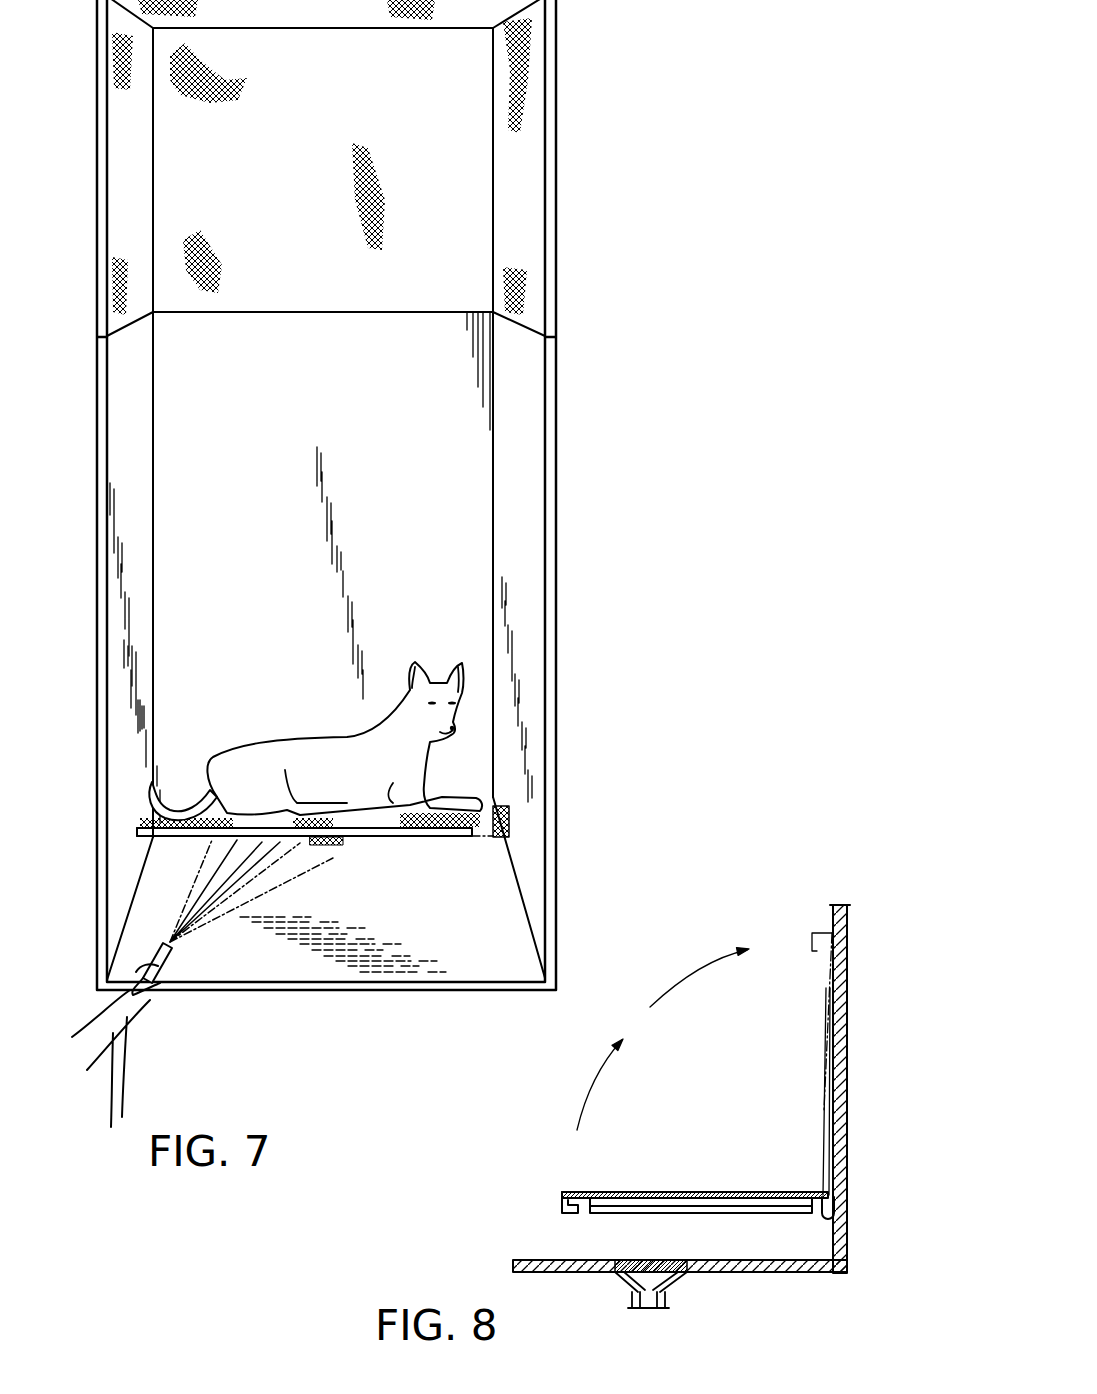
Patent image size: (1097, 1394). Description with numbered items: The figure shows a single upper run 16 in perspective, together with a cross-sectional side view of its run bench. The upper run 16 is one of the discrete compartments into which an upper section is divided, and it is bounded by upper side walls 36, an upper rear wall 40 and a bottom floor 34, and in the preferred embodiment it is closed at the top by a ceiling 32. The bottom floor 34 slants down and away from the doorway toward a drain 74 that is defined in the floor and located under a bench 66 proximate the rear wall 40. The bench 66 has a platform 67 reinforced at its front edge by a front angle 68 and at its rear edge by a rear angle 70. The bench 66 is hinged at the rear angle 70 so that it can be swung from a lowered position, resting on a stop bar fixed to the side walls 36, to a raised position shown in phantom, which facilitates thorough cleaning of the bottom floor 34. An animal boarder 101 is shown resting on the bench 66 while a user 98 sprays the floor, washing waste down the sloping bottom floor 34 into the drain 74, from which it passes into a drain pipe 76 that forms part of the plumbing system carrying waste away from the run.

In FIG. 7, the upper run 16 is at (572, 512).
In FIG. 7, the ceiling 32 is at (333, 28).
In FIG. 7, the bottom floor 34 is at (326, 888).
In FIG. 8, the bottom floor 34 is at (562, 1273).
In FIG. 7, the upper side walls 36 is at (143, 487).
In FIG. 7, the upper rear wall 40 is at (323, 432).
In FIG. 8, the upper rear wall 40 is at (848, 1090).
In FIG. 7, the bench 66 is at (438, 848).
In FIG. 8, the bench 66 is at (808, 1130).
In FIG. 7, the platform 67 is at (187, 797).
In FIG. 8, the platform 67 is at (660, 1190).
In FIG. 7, the front angle 68 is at (180, 838).
In FIG. 8, the front angle 68 is at (562, 1200).
In FIG. 8, the rear angle 70 is at (834, 1215).
In FIG. 7, the drain 74 is at (343, 846).
In FIG. 8, the drain 74 is at (663, 1260).
In FIG. 8, the drain pipe 76 is at (667, 1300).
In FIG. 7, the user 98 is at (95, 1025).
In FIG. 7, the animal boarder 101 is at (343, 737).